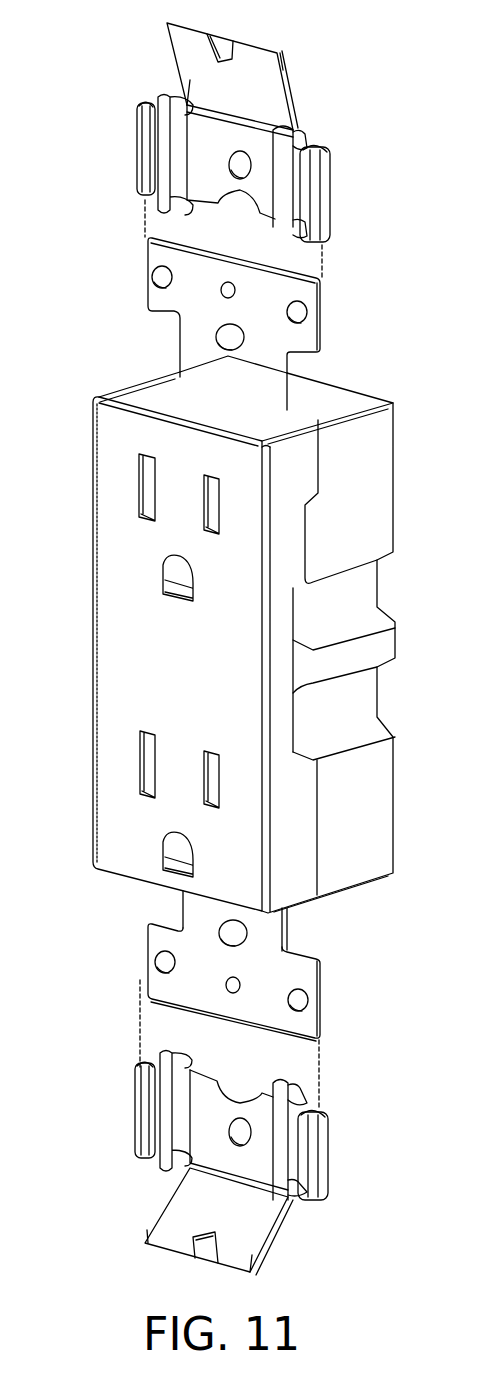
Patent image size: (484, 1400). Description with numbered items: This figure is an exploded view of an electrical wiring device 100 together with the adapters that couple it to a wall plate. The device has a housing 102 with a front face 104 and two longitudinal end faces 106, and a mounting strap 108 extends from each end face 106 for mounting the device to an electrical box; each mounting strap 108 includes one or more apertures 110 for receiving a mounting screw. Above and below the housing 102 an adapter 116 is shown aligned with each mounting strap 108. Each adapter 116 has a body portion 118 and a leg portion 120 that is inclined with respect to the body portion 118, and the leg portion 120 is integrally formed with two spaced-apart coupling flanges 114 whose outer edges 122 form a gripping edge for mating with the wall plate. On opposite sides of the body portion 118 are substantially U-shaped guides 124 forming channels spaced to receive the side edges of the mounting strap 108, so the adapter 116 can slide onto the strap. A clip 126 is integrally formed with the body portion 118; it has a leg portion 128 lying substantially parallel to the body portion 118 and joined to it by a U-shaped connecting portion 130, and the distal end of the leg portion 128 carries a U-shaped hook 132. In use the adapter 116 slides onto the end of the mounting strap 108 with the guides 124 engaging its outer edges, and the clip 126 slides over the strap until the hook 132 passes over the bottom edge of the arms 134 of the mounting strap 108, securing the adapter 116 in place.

The electrical wiring device 100 is at (402, 455).
The housing 102 is at (364, 507).
The front face 104 is at (113, 653).
The longitudinal end face 106 is at (317, 395).
The mounting strap 108 is at (140, 273).
The aperture 110 is at (215, 347).
The coupling flange 114 is at (207, 73).
The adapter 116 is at (297, 91).
The body portion 118 is at (180, 183).
The leg portion 120 is at (207, 75).
The outer edge 122 is at (215, 22).
The U-shaped guide 124 is at (328, 168).
The clip 126 is at (143, 150).
The leg portion of clip 128 is at (303, 205).
The U-shaped connecting portion 130 is at (298, 137).
The U-shaped hook 132 is at (170, 1045).
The arm of mounting strap 134 is at (278, 288).